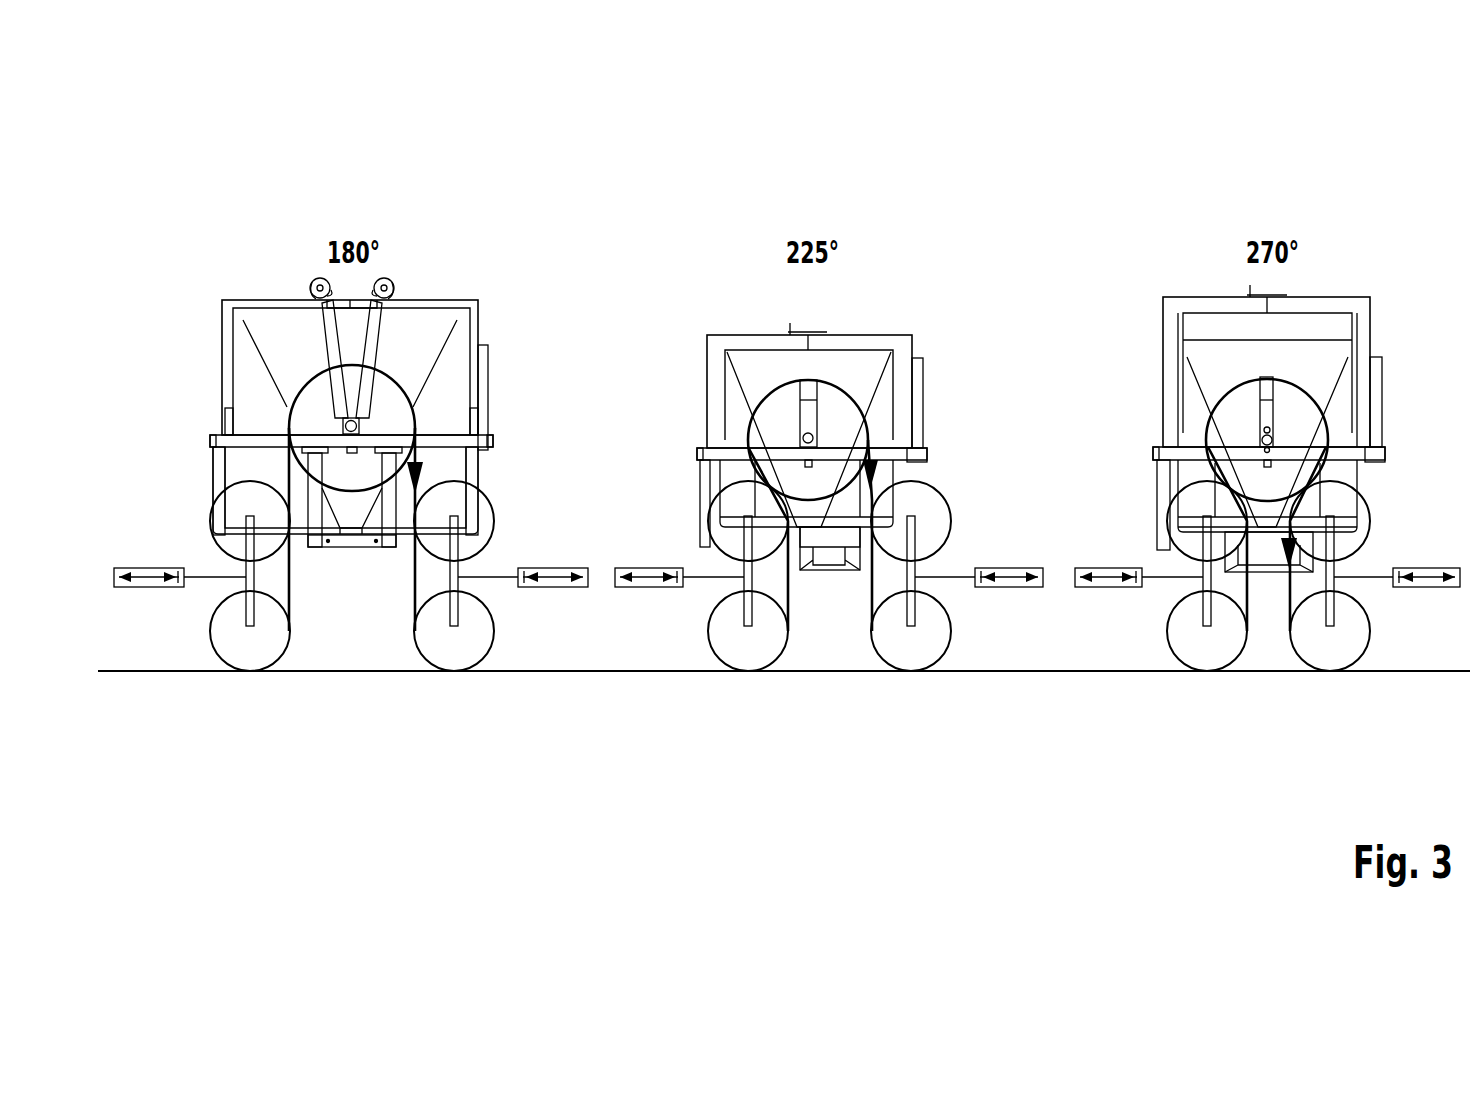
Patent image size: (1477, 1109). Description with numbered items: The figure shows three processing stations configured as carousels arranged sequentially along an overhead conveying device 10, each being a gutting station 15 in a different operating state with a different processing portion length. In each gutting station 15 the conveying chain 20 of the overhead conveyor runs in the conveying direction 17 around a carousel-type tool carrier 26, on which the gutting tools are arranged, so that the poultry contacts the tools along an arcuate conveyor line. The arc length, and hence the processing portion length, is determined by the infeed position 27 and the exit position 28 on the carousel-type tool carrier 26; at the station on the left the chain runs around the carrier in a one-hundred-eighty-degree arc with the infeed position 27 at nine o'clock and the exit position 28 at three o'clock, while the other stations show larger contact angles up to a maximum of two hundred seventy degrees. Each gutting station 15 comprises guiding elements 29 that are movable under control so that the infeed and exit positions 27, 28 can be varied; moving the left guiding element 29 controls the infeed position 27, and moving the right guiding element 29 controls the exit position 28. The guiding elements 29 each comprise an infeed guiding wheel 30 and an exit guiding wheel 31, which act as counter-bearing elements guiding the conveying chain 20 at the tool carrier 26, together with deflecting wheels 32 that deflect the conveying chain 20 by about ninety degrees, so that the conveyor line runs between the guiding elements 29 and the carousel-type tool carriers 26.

The overhead conveying device 10 is at (784, 728).
The gutting station 15 is at (421, 204).
The conveying direction 17 is at (421, 478).
The conveying chain 20 is at (598, 674).
The carousel-type tool carrier 26 is at (403, 392).
The infeed position 27 is at (272, 427).
The exit position 28 is at (432, 427).
The guiding element 29 is at (411, 671).
The infeed guiding wheel 30 is at (209, 523).
The exit guiding wheel 31 is at (495, 524).
The deflecting wheel 32 is at (233, 660).